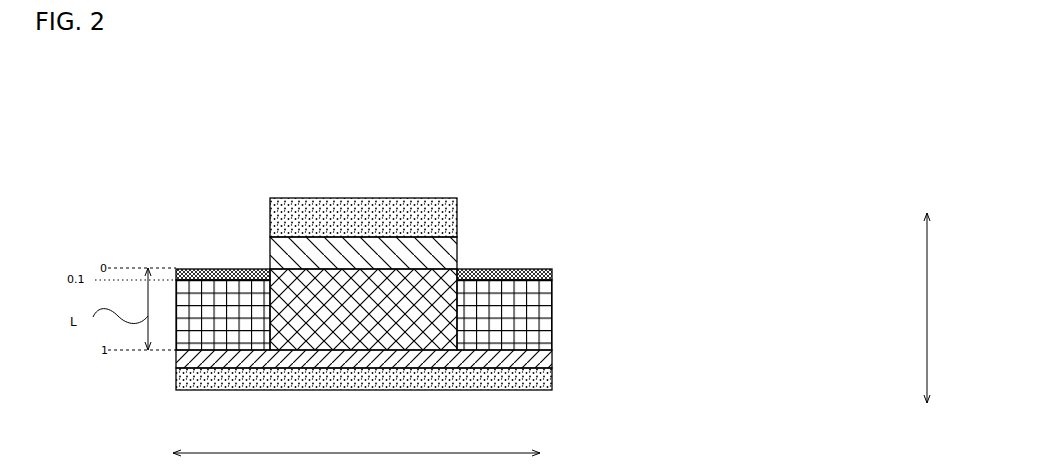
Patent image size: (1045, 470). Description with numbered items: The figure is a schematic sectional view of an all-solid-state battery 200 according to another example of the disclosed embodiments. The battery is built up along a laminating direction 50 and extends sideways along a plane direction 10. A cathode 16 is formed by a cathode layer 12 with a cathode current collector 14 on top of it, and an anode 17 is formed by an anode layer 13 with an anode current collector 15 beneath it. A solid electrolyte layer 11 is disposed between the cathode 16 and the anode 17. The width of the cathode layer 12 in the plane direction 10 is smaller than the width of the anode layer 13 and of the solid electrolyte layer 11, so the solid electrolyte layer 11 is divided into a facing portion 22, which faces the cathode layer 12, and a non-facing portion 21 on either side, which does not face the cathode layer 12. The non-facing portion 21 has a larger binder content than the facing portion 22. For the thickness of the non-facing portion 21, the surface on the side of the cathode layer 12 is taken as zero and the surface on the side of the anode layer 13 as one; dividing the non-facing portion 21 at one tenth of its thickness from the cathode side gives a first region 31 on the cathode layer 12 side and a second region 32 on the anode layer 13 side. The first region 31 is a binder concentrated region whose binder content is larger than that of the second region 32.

The all-solid-state battery 200 is at (160, 140).
The plane direction 10 is at (376, 453).
The laminating direction 50 is at (927, 289).
The solid electrolyte layer 11 is at (817, 208).
The cathode layer 12 is at (457, 240).
The anode layer 13 is at (553, 353).
The cathode current collector 14 is at (447, 198).
The anode current collector 15 is at (553, 373).
The cathode 16 is at (590, 137).
The anode 17 is at (640, 338).
The non-facing portion 21 is at (112, 183).
The facing portion 22 is at (457, 268).
The first region 31 is at (196, 270).
The second region 32 is at (232, 272).